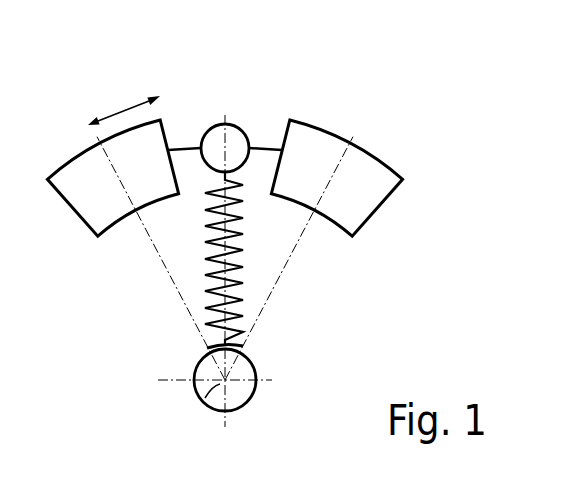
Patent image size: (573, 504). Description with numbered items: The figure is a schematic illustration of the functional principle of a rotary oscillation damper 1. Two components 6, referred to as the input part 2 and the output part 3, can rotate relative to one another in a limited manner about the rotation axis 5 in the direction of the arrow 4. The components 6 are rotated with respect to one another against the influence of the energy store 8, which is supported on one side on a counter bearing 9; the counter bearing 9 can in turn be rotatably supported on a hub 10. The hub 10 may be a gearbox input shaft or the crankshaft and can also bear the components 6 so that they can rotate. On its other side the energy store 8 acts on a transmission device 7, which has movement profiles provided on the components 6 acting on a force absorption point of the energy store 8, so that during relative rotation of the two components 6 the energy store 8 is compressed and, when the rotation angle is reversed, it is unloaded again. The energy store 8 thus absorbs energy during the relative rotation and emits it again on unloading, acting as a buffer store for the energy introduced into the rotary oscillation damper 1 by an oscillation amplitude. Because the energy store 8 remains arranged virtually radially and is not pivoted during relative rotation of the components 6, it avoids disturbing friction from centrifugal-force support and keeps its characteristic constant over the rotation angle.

The rotary oscillation damper 1 is at (253, 227).
The input part 2 is at (101, 201).
The output part 3 is at (366, 203).
The arrow 4 is at (124, 108).
The rotation axis 5 is at (193, 402).
The components 6 is at (63, 230).
The transmission device 7 is at (232, 133).
The energy store 8 is at (237, 240).
The counter bearing 9 is at (240, 345).
The hub 10 is at (242, 370).